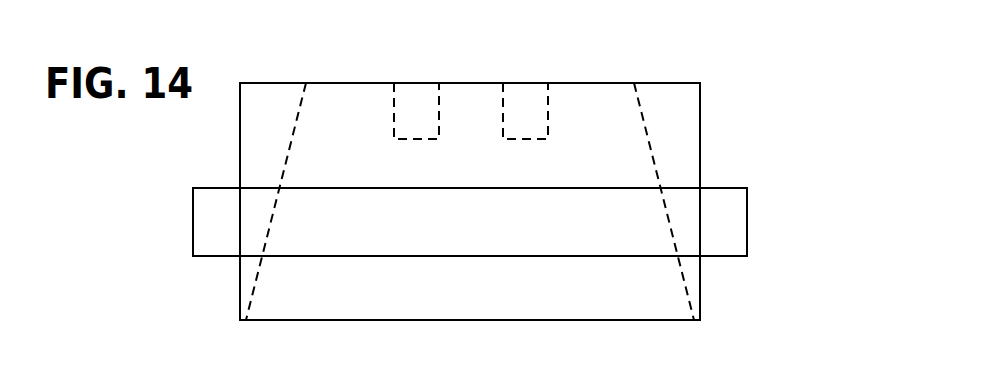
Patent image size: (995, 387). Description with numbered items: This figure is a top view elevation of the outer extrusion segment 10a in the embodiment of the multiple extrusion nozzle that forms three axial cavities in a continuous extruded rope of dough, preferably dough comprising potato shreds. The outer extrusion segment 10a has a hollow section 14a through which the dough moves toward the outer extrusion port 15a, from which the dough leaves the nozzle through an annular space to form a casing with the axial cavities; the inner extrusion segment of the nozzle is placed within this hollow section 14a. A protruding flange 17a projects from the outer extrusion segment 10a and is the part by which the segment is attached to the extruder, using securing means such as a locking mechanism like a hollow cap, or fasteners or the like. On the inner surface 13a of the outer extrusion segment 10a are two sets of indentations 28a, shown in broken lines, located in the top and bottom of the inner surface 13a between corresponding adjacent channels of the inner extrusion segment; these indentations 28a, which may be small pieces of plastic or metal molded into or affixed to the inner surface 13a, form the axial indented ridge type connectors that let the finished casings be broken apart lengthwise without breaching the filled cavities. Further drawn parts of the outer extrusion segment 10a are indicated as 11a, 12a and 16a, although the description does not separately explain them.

The outer extrusion segment 10a is at (717, 170).
The top surface 11a is at (702, 88).
The side surface 12a is at (700, 117).
The inner surface 13a is at (290, 122).
The hollow section 14a is at (366, 292).
The outer extrusion port 15a is at (334, 80).
The bottom surface 16a is at (577, 326).
The protruding flange 17a is at (748, 218).
The sets of indentations 28a is at (513, 81).